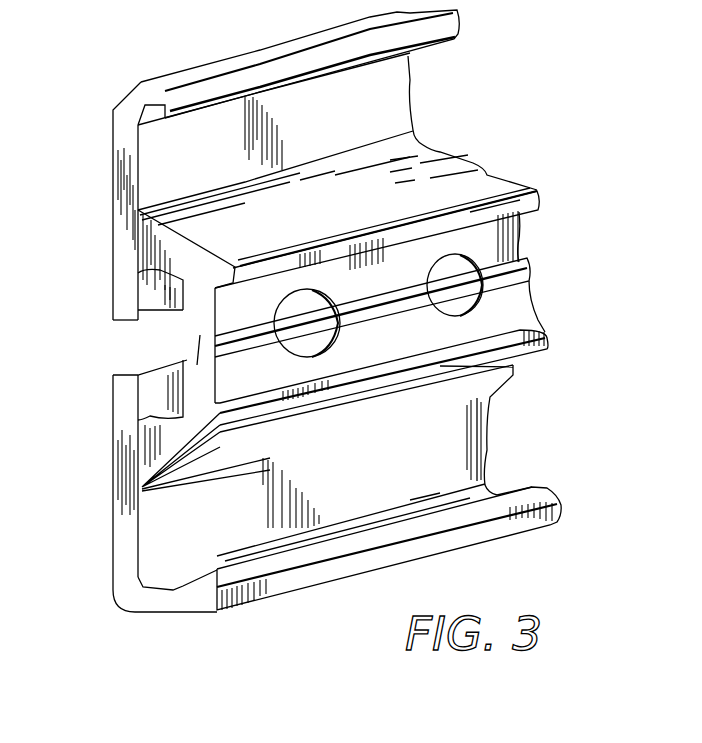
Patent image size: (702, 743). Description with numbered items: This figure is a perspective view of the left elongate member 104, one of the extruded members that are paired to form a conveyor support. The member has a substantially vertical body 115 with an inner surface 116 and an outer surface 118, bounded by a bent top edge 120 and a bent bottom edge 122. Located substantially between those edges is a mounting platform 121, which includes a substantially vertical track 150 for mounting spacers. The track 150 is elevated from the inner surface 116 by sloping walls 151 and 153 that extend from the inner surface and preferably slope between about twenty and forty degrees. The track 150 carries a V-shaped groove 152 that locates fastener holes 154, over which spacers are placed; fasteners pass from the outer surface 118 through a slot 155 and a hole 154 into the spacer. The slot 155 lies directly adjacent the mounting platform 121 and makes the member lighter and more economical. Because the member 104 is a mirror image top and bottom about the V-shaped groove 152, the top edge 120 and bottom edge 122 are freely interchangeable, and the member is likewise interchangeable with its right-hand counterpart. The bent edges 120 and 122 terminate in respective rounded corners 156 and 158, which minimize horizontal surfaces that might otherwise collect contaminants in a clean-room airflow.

The left elongate member 104 is at (113, 257).
The vertical body 115 is at (125, 228).
The inner surface 116 is at (387, 99).
The outer surface 118 is at (113, 168).
The top edge 120 is at (187, 97).
The mounting platform 121 is at (183, 388).
The bottom edge 122 is at (193, 598).
The track 150 is at (516, 243).
The sloping wall 151 is at (177, 253).
The V-shaped groove 152 is at (528, 272).
The sloping wall 153 is at (167, 443).
The fastener hole 154 is at (332, 343).
The slot 155 is at (168, 340).
The rounded corner 156 is at (133, 100).
The rounded corner 158 is at (140, 592).